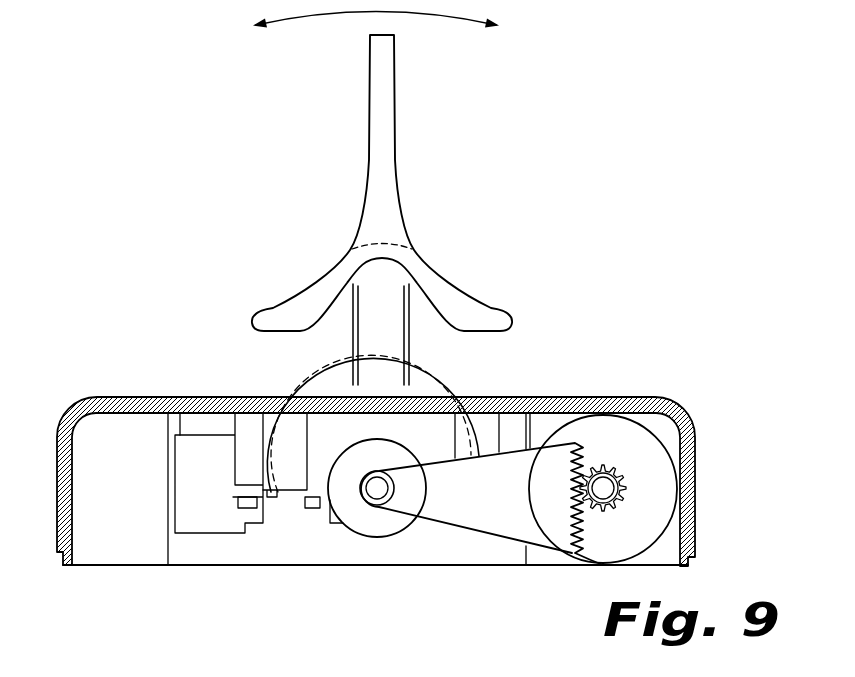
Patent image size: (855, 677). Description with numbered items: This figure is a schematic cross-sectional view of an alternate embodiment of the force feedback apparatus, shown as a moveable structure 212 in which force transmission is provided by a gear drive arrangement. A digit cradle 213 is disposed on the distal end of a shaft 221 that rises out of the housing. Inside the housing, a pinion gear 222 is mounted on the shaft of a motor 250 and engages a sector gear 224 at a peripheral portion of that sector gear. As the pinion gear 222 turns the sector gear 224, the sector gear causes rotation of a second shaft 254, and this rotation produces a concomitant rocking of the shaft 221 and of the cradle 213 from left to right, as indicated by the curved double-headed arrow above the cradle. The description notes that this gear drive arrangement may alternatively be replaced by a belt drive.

The moveable structure 212 is at (570, 292).
The digit cradle 213 is at (393, 68).
The shaft 221 is at (353, 327).
The pinion gear 222 is at (625, 485).
The sector gear 224 is at (470, 518).
The motor 250 is at (645, 447).
The shaft 254 is at (384, 488).